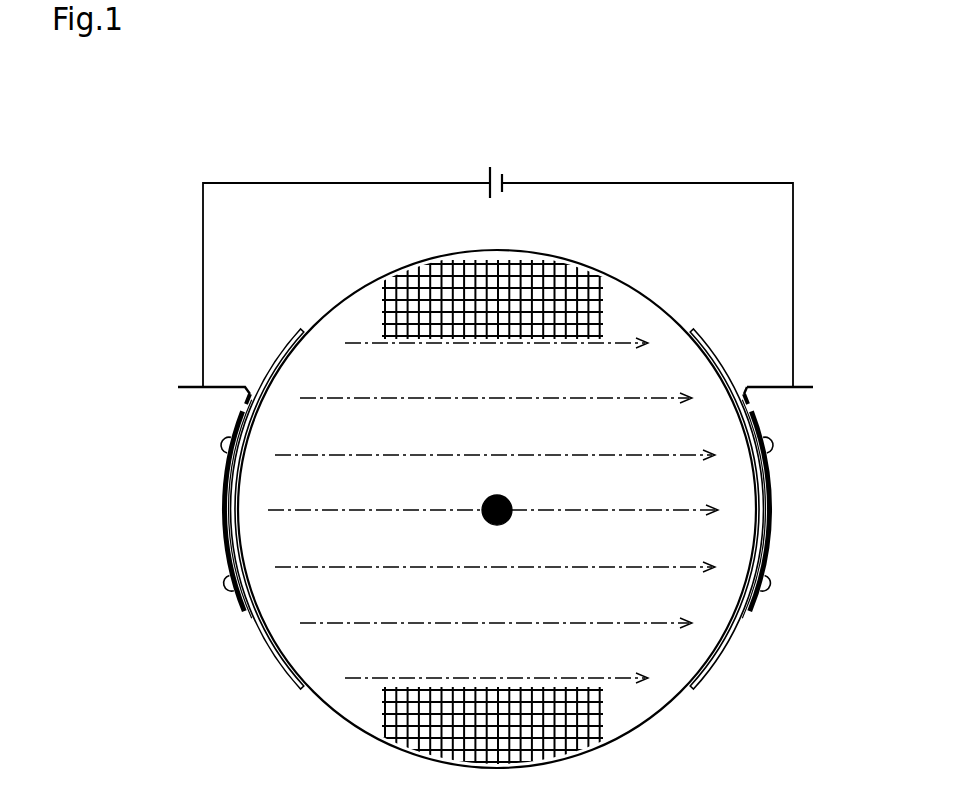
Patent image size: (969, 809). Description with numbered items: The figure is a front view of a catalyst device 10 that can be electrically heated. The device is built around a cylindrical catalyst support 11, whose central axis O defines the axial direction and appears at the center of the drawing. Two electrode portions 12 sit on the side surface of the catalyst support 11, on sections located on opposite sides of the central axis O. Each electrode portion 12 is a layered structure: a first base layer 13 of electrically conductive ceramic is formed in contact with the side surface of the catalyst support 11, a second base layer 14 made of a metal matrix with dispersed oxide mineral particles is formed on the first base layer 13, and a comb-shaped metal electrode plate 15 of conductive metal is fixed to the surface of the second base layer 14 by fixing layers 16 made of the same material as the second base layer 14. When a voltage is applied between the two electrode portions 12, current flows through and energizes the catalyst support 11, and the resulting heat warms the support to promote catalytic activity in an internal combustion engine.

The catalyst device 10 is at (140, 308).
The catalyst support 11 is at (328, 316).
The electrode portion 12 is at (190, 487).
The first base layer 13 is at (289, 678).
The second base layer 14 is at (250, 604).
The metal electrode plate 15 is at (223, 520).
The fixing layer 16 is at (222, 443).
The central axis O is at (508, 494).